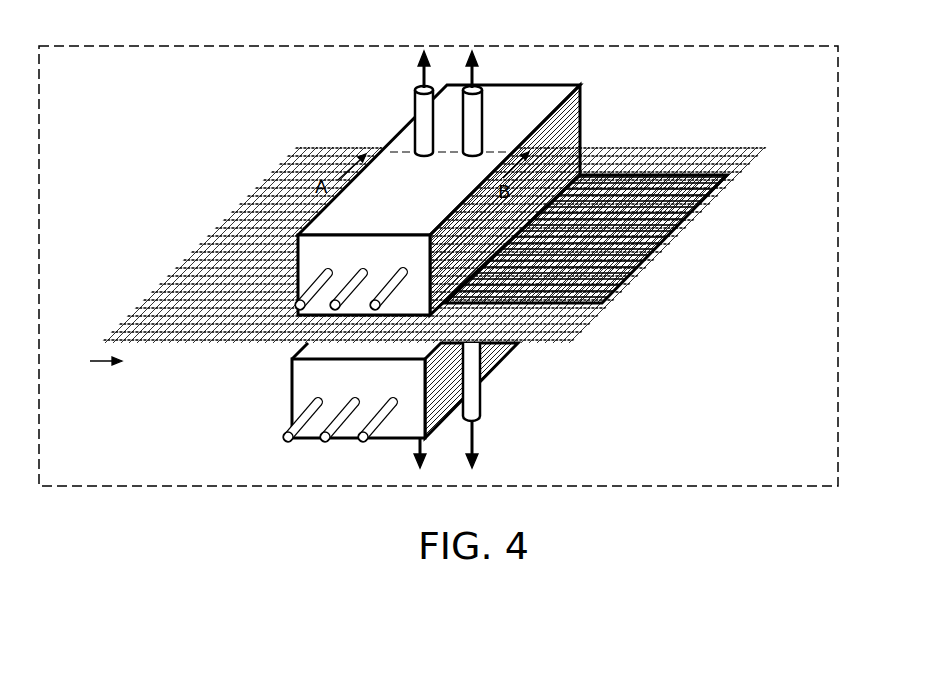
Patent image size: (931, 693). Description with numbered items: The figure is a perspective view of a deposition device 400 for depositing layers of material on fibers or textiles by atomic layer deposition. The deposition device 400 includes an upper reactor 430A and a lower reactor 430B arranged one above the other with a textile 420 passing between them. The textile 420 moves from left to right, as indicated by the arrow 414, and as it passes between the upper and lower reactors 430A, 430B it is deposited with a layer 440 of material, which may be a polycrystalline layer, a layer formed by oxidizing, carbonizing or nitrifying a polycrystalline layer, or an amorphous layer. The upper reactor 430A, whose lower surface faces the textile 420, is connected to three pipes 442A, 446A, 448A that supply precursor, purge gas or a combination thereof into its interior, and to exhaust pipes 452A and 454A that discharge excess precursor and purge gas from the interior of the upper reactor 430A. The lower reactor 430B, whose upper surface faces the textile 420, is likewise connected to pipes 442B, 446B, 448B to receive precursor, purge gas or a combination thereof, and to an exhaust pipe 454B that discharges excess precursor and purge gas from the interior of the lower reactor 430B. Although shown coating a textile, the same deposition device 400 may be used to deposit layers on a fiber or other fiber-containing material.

The deposition device 400 is at (96, 84).
The arrow 414 is at (102, 361).
The textile 420 is at (172, 262).
The upper reactor 430A is at (420, 204).
The lower reactor 430B is at (390, 382).
The layer 440 is at (643, 223).
The pipe 442A is at (303, 289).
The pipe 446A is at (347, 284).
The pipe 448A is at (393, 283).
The pipe 442B is at (297, 424).
The pipe 446B is at (337, 425).
The pipe 448B is at (383, 422).
The exhaust pipe 452A is at (423, 112).
The exhaust pipe 454A is at (473, 123).
The exhaust pipe 454B is at (472, 404).